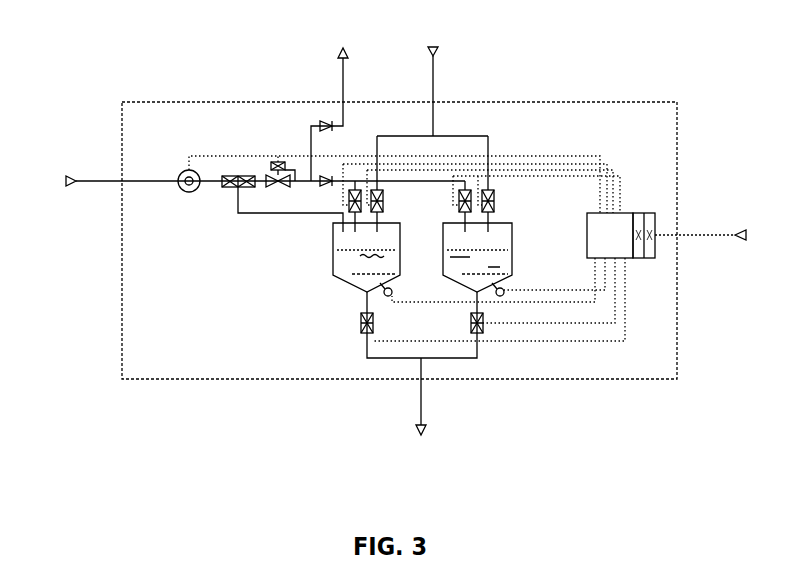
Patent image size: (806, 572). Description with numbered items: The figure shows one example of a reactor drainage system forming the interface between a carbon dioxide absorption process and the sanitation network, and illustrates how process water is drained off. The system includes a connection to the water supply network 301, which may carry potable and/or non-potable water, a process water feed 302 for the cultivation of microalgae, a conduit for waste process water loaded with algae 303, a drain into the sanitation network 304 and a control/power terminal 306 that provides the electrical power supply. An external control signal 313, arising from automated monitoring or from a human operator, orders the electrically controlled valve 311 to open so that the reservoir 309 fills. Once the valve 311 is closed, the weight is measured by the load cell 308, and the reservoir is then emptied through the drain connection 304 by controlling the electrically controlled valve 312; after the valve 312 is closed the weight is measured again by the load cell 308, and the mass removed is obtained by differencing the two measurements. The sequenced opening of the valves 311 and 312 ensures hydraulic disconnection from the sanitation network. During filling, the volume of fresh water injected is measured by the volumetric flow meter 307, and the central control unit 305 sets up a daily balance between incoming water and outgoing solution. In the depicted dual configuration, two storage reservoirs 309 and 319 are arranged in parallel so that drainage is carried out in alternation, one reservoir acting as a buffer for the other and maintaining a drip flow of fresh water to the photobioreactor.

The connection to the water supply network 301 is at (78, 181).
The process water feed 302 is at (343, 64).
The conduit for waste process water loaded with algae 303 is at (433, 68).
The drain into the sanitation network 304 is at (422, 406).
The central control unit 305 is at (628, 213).
The control/power terminal 306 is at (642, 259).
The volumetric flow meter 307 is at (189, 192).
The load cell 308 is at (503, 292).
The reservoir 309 is at (513, 242).
The electrically controlled valve 311 is at (494, 204).
The electrically controlled valve 312 is at (484, 328).
The external control signal 313 is at (722, 234).
The storage reservoir 319 is at (326, 257).